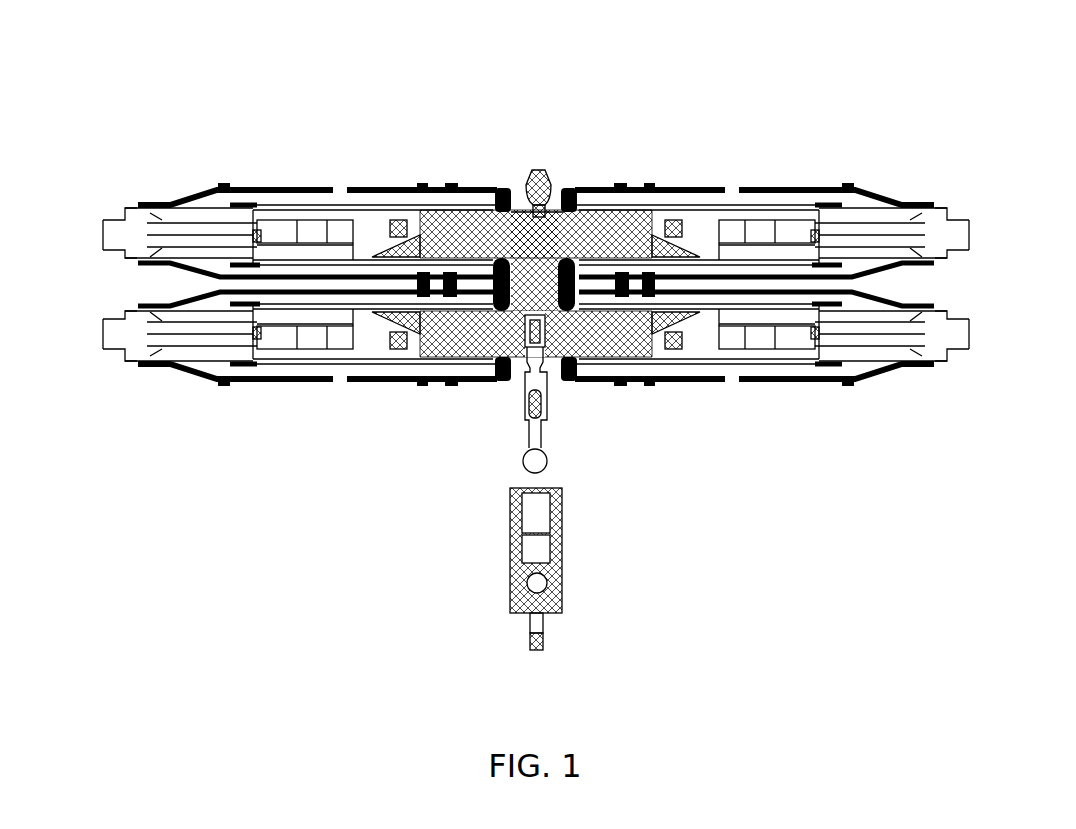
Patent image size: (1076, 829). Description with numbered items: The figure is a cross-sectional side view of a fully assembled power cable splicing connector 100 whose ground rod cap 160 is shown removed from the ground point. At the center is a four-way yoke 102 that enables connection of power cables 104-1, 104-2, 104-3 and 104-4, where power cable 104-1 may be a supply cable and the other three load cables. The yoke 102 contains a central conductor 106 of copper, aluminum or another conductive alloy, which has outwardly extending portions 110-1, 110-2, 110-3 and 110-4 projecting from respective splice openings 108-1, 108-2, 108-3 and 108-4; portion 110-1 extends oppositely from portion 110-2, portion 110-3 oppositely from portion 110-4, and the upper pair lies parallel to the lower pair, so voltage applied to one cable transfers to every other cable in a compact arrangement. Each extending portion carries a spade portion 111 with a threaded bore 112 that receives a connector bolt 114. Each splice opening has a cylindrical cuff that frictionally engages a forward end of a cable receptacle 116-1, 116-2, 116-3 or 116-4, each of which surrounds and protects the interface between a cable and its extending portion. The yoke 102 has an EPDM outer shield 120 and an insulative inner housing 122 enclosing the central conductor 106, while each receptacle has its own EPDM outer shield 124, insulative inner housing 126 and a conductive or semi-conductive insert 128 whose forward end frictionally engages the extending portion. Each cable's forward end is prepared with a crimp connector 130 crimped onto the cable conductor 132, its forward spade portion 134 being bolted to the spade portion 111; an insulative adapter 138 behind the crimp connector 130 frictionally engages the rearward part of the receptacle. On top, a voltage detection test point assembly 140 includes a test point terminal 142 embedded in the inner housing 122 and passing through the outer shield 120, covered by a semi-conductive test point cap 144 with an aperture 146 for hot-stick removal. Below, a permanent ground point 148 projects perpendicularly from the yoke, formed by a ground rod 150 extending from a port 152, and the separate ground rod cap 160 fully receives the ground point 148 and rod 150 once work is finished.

The power cable splicing connector 100 is at (678, 90).
The four-way yoke 102 is at (573, 192).
The power cable 104-1 is at (68, 232).
The power cable 104-2 is at (1013, 233).
The power cable 104-3 is at (63, 347).
The power cable 104-4 is at (1020, 342).
The central conductor 106 is at (508, 400).
The splice opening 108-1 is at (489, 205).
The splice opening 108-2 is at (588, 210).
The splice opening 108-3 is at (478, 370).
The splice opening 108-4 is at (578, 372).
The outwardly extending portion 110-1 is at (425, 207).
The outwardly extending portion 110-2 is at (632, 207).
The outwardly extending portion 110-3 is at (437, 347).
The outwardly extending portion 110-4 is at (635, 350).
The spade portion 111 is at (400, 222).
The threaded bore 112 is at (398, 262).
The connector bolt 114 is at (415, 255).
The cable receptacle 116-1 is at (256, 168).
The cable receptacle 116-2 is at (826, 176).
The cable receptacle 116-3 is at (260, 396).
The cable receptacle 116-4 is at (795, 398).
The outer shield 120 is at (505, 215).
The insulative inner housing 122 is at (510, 222).
The outer shield 124 is at (233, 389).
The insulative inner housing 126 is at (277, 205).
The insert 128 is at (312, 210).
The crimp connector 130 is at (312, 246).
The cable conductor 132 is at (257, 235).
The forward spade portion 134 is at (397, 241).
The adapter 138 is at (190, 220).
The voltage detection test point assembly 140 is at (543, 150).
The test point terminal 142 is at (513, 205).
The test point cap 144 is at (553, 190).
The aperture 146 is at (537, 183).
The permanent ground point 148 is at (565, 453).
The ground rod 150 is at (535, 440).
The port 152 is at (550, 415).
The ground rod cap 160 is at (592, 550).